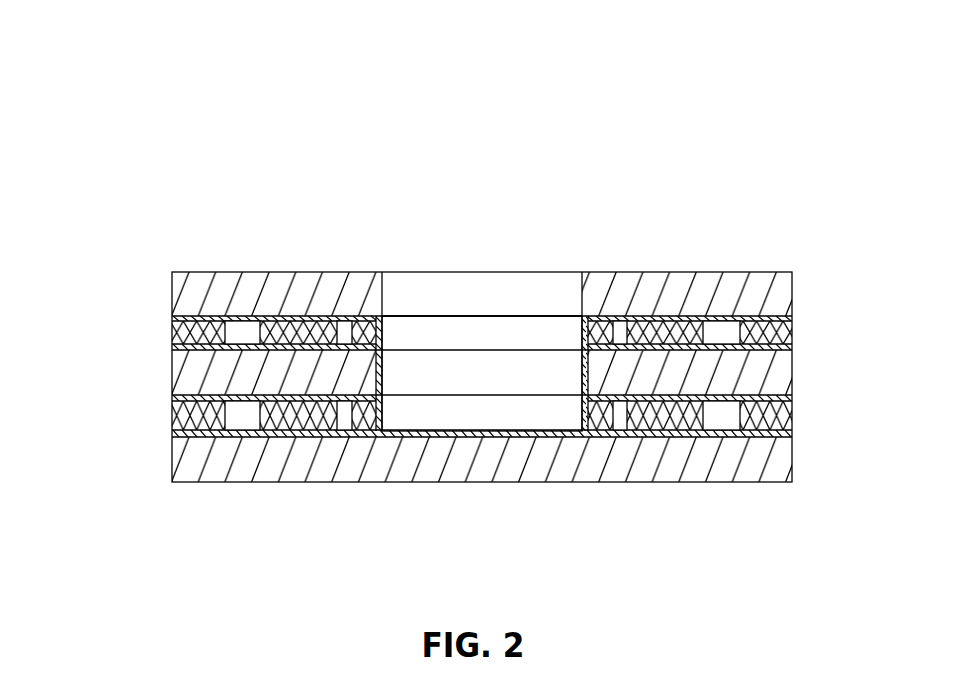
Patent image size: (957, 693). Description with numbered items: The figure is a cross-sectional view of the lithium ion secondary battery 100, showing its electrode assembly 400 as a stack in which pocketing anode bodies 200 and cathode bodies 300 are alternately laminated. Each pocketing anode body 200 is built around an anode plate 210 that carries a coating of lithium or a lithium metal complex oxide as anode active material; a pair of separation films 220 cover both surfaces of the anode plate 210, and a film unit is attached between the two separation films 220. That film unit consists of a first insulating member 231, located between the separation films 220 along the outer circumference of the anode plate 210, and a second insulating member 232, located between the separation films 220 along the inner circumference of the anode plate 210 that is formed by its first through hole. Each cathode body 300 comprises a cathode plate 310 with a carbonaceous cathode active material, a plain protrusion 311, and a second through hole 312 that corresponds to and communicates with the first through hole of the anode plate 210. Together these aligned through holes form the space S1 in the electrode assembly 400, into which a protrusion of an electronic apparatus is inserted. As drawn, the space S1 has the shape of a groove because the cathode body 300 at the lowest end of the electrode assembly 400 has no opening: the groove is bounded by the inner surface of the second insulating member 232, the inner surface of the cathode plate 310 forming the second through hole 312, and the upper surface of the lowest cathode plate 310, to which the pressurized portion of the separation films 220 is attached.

The lithium ion secondary battery 100 is at (630, 89).
The pocketing anode body 200 is at (160, 330).
The anode plate 210 is at (283, 320).
The separation films 220 is at (695, 321).
The first insulating member 231 is at (760, 326).
The second insulating member 232 is at (355, 323).
The cathode body 300 is at (160, 288).
The cathode plate 310 is at (622, 282).
The plain protrusion 311 is at (530, 331).
The second through hole 312 is at (390, 289).
The electrode assembly 400 is at (800, 273).
The space S1 is at (443, 371).